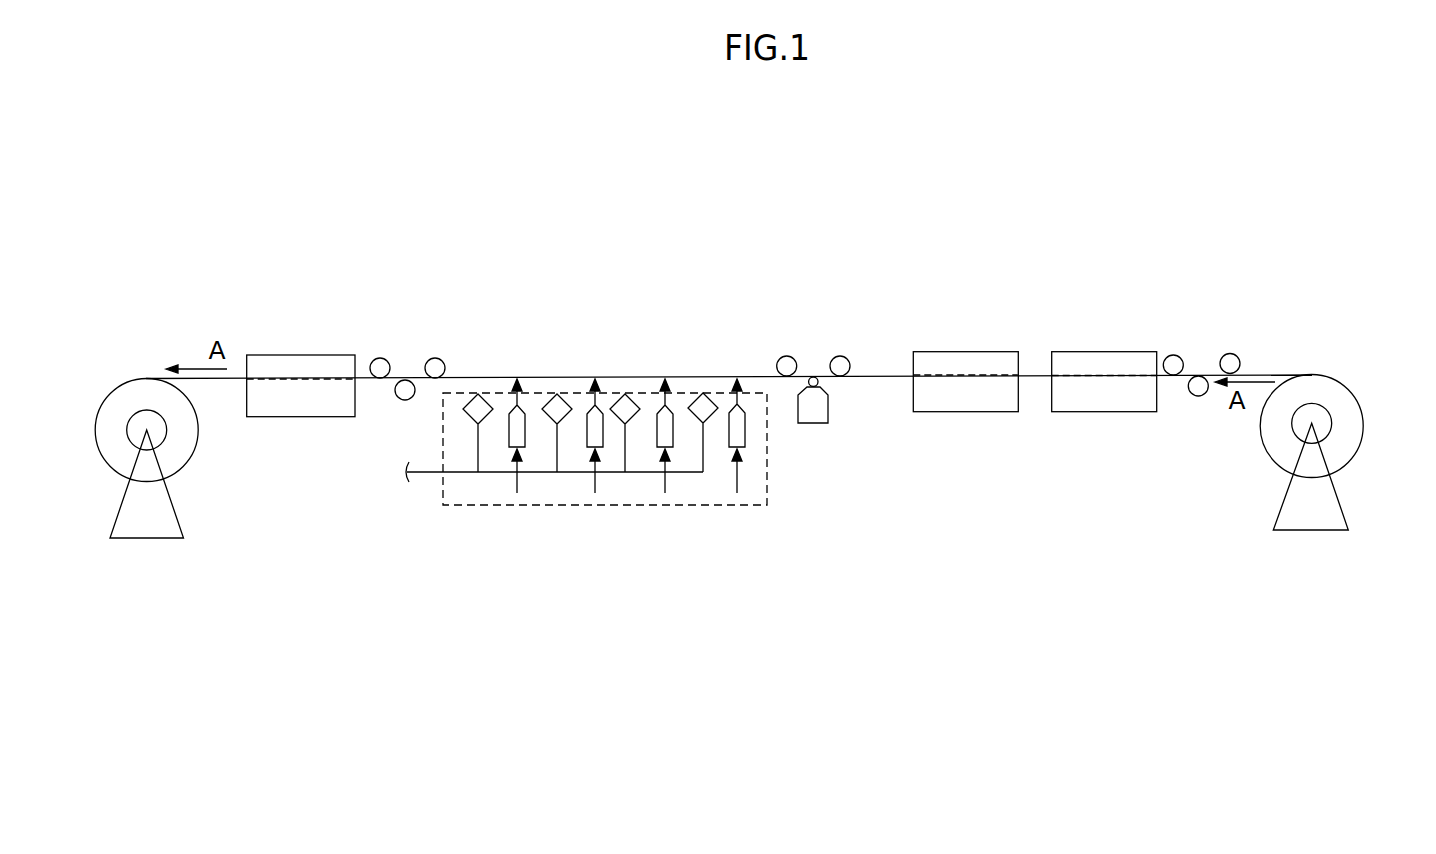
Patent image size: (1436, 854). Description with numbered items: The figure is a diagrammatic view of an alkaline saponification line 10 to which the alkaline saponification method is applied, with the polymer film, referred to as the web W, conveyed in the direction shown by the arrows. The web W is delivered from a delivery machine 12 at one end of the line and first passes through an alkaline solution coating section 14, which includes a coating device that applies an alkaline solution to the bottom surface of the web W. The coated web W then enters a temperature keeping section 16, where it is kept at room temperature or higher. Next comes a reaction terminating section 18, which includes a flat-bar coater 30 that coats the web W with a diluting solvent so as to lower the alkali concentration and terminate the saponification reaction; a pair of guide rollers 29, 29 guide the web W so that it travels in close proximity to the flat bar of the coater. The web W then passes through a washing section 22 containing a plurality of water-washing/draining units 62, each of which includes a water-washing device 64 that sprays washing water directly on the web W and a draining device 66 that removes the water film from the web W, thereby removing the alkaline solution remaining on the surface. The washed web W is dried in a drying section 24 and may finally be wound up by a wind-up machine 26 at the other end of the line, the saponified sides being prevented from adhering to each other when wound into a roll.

The alkaline saponification line 10 is at (1177, 159).
The delivery machine 12 is at (1360, 393).
The alkaline solution coating section 14 is at (1107, 352).
The temperature keeping section 16 is at (968, 352).
The reaction terminating section 18 is at (824, 340).
The washing section 22 is at (611, 462).
The drying section 24 is at (299, 355).
The wind-up machine 26 is at (197, 468).
The guide roller 29 is at (783, 357).
The flat-bar coater 30 is at (837, 415).
The water-washing/draining unit 62 is at (752, 440).
The water-washing device 64 is at (772, 436).
The draining device 66 is at (707, 394).
The web W is at (1275, 374).